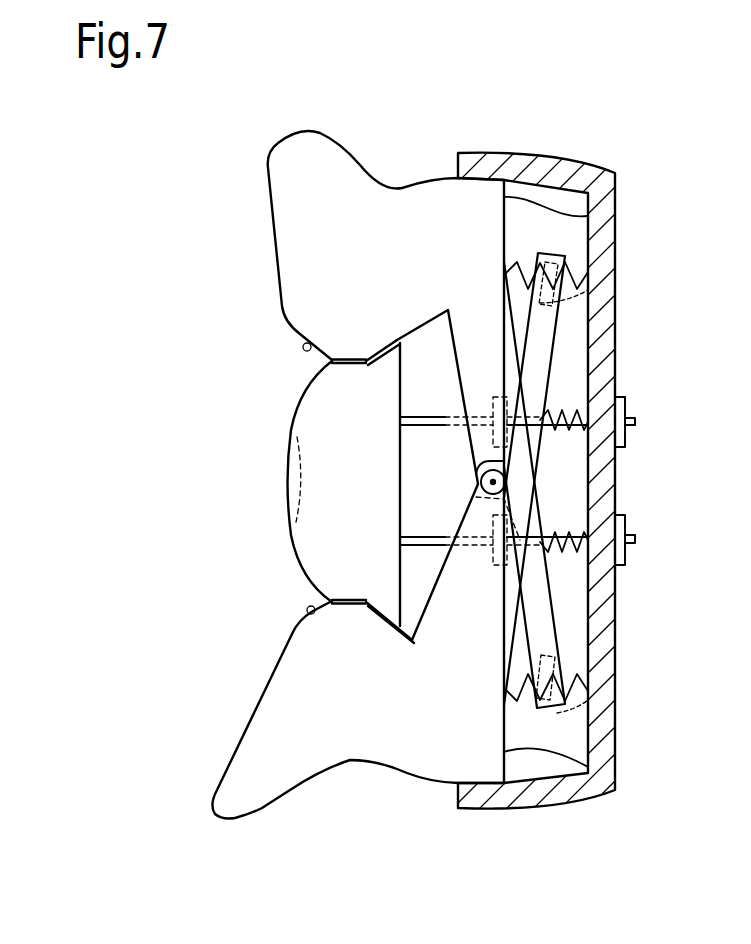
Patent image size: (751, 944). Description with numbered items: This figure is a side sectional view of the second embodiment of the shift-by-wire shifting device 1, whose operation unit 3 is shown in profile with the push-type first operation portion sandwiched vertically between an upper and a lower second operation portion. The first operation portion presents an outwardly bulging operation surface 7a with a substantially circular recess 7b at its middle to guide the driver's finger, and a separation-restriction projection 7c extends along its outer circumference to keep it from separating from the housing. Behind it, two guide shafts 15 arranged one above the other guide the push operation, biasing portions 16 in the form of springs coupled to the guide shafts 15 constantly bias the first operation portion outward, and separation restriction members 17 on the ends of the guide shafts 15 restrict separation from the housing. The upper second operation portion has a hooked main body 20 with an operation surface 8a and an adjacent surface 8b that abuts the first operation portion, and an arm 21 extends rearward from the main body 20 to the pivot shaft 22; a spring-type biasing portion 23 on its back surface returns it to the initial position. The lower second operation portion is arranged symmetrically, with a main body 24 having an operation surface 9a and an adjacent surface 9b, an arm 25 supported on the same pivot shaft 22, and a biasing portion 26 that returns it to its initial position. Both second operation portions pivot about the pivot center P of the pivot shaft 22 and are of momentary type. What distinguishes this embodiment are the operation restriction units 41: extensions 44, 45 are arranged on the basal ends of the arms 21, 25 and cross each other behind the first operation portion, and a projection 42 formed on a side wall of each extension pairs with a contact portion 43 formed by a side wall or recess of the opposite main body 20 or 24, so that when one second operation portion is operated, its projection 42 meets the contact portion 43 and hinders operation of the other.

The shifting device 1 is at (240, 102).
The operation unit 3 is at (341, 152).
The operation surface 7a is at (297, 413).
The recess 7b is at (297, 479).
The separation-restriction projection 7c is at (387, 352).
The operation surface 8a is at (277, 257).
The adjacent surface 8b is at (310, 343).
The operation surface 9a is at (264, 692).
The adjacent surface 9b is at (316, 613).
The guide shaft 15 is at (420, 416).
The biasing portion 16 is at (563, 408).
The separation restriction member 17 is at (627, 397).
The main body 20 is at (295, 158).
The arm 21 is at (478, 390).
The pivot shaft 22 is at (480, 484).
The biasing portion 23 is at (512, 272).
The main body 24 is at (244, 800).
The arm 25 is at (480, 518).
The biasing portion 26 is at (583, 668).
The operation restriction unit 41 is at (695, 193).
The projection 42 is at (588, 290).
The contact portion 43 is at (590, 218).
The extension 44 is at (547, 633).
The extension 45 is at (547, 343).
The pivot center P is at (492, 481).